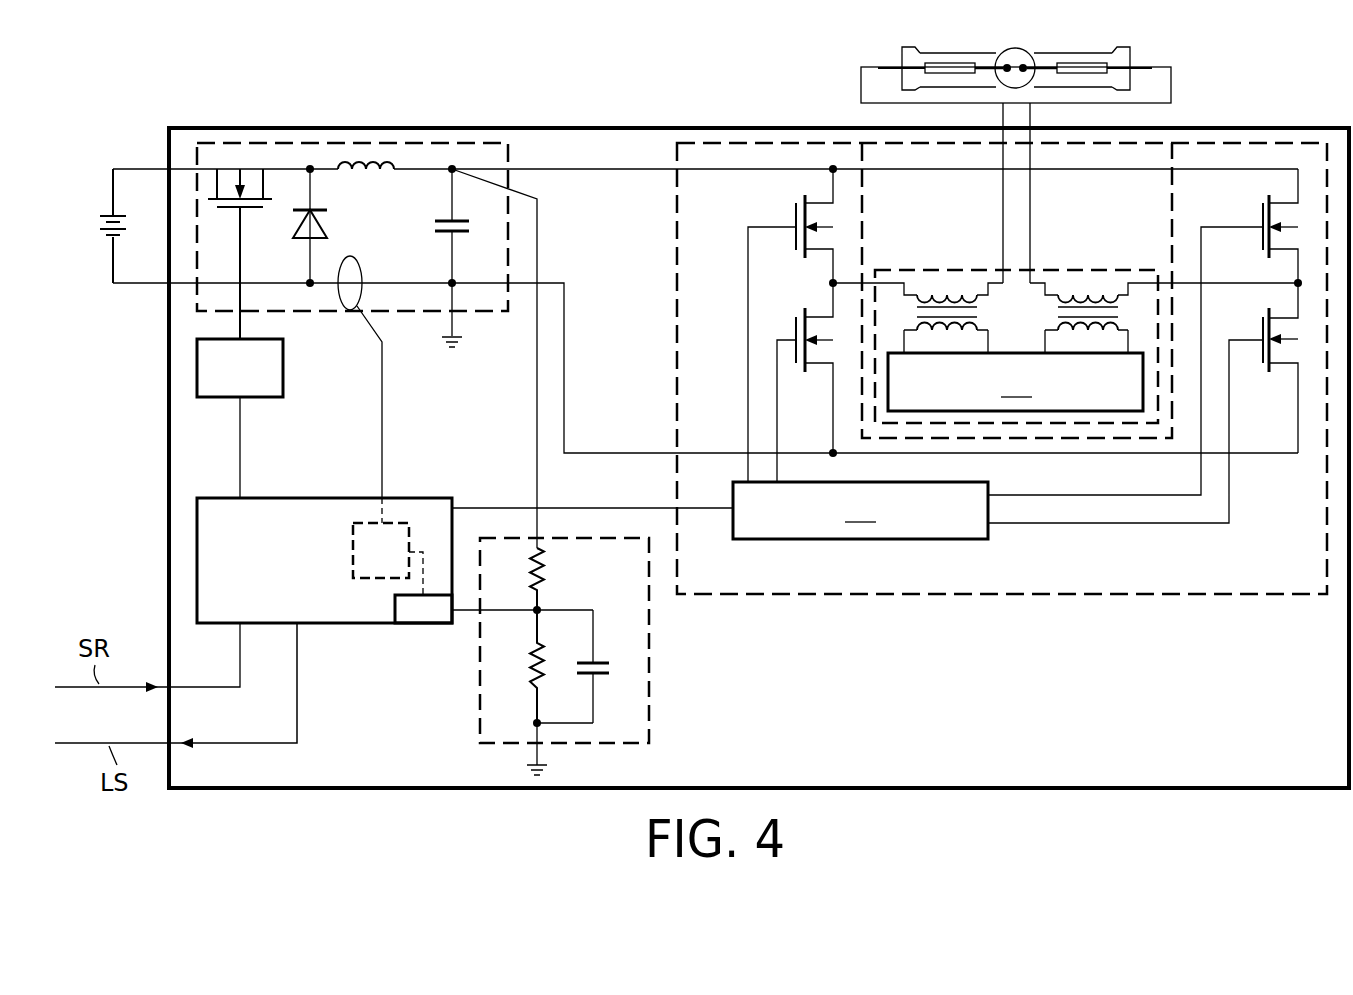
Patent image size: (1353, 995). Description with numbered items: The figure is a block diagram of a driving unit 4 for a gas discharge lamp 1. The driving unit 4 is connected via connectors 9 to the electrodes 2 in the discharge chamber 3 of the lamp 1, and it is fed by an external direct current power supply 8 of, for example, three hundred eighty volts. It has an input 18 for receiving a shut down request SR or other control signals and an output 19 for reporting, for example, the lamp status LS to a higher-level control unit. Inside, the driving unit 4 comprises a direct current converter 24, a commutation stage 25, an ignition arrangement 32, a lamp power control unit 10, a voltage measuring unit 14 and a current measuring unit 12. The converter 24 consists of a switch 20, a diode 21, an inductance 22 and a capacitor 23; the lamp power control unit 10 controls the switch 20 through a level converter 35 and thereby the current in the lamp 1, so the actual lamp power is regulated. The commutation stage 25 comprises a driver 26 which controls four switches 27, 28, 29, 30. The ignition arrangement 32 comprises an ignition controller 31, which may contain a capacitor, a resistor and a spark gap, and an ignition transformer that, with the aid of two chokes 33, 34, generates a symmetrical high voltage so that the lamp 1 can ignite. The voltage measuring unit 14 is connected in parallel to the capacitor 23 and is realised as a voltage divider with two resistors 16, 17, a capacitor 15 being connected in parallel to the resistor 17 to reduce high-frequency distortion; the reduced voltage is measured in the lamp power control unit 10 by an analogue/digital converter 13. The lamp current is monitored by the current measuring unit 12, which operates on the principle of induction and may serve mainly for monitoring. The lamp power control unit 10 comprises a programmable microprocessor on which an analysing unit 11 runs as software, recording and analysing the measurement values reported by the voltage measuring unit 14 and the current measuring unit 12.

The gas discharge lamp 1 is at (1136, 50).
The electrodes 2 is at (1025, 64).
The discharge chamber 3 is at (1008, 62).
The driving unit 4 is at (593, 127).
The power supply 8 is at (104, 216).
The connectors 9 is at (1000, 152).
The lamp power control unit 10 is at (419, 504).
The analysing unit 11 is at (395, 564).
The current measuring unit 12 is at (362, 270).
The analogue/digital converter 13 is at (448, 625).
The voltage measuring unit 14 is at (650, 712).
The capacitor 15 is at (600, 657).
The resistor 16 is at (548, 578).
The resistor 17 is at (526, 669).
The input 18 is at (160, 685).
The output 19 is at (176, 747).
The switch 20 is at (221, 183).
The diode 21 is at (318, 209).
The inductance 22 is at (372, 163).
The capacitor 23 is at (443, 219).
The direct current converter 24 is at (464, 143).
The commutation stage 25 is at (946, 596).
The driver 26 is at (998, 383).
The switch 27 is at (792, 222).
The switch 28 is at (792, 334).
The switch 29 is at (1258, 220).
The switch 30 is at (1258, 333).
The ignition controller 31 is at (1015, 382).
The ignition arrangement 32 is at (962, 268).
The choke 33 is at (932, 296).
The choke 34 is at (1072, 296).
The level converter 35 is at (283, 363).